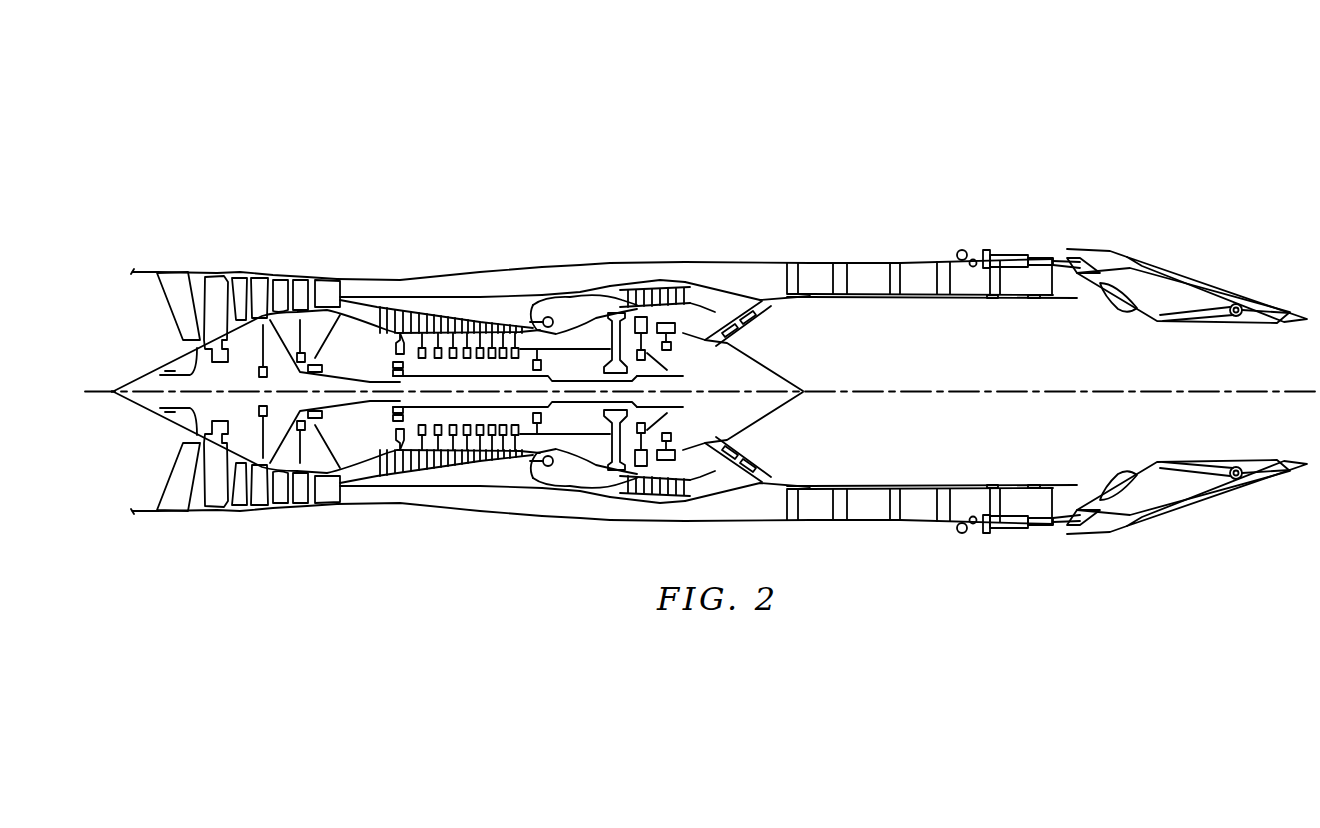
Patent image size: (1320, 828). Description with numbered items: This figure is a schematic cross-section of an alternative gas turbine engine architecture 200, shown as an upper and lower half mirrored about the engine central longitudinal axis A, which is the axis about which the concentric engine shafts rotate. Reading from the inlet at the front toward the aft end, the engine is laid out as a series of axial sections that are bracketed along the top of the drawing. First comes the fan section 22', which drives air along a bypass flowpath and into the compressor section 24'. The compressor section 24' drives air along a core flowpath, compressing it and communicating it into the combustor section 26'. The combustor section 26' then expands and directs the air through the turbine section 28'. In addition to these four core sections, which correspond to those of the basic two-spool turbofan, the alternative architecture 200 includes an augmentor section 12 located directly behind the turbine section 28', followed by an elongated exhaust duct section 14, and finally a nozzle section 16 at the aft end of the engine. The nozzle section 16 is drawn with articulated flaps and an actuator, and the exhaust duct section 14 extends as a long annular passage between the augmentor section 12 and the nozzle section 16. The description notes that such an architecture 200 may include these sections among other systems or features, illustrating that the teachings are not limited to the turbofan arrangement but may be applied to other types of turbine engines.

The alternative engine architecture 200 is at (1035, 136).
The fan section 22' is at (256, 334).
The compressor section 24' is at (487, 335).
The combustor section 26' is at (583, 337).
The turbine section 28' is at (647, 338).
The augmentor section 12 is at (685, 208).
The exhaust duct section 14 is at (1072, 208).
The nozzle section 16 is at (1072, 208).
The engine central longitudinal axis A is at (1225, 390).